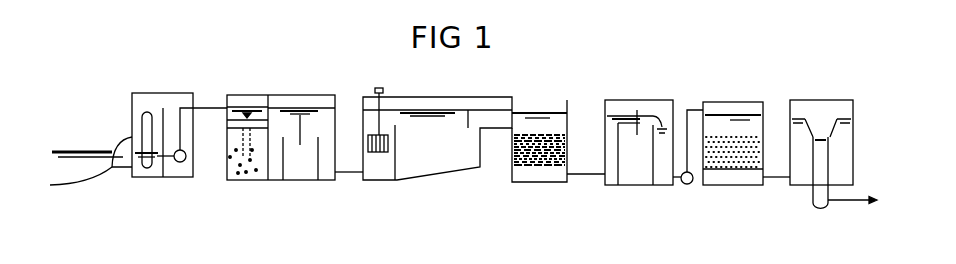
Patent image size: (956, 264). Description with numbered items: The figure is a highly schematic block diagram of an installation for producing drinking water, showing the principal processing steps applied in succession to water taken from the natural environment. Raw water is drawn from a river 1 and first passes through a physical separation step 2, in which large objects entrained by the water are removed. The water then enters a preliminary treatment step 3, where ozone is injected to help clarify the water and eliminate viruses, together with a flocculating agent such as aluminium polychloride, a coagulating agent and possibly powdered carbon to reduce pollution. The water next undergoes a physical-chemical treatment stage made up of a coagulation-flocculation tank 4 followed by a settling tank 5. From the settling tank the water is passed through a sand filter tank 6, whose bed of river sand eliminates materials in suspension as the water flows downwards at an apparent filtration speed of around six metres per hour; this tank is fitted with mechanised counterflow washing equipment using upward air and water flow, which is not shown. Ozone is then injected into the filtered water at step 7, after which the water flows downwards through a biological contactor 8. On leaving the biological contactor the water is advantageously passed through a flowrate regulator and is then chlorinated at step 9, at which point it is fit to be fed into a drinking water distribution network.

The river 1 is at (73, 150).
The physical separation step 2 is at (157, 91).
The preliminary treatment injection step 3 is at (254, 92).
The coagulation-flocculation tank 4 is at (375, 181).
The settling tank 5 is at (432, 163).
The sand filter tank 6 is at (531, 111).
The ozone injection into filtered water 7 is at (629, 99).
The biological contactor 8 is at (723, 101).
The chlorination step 9 is at (815, 99).